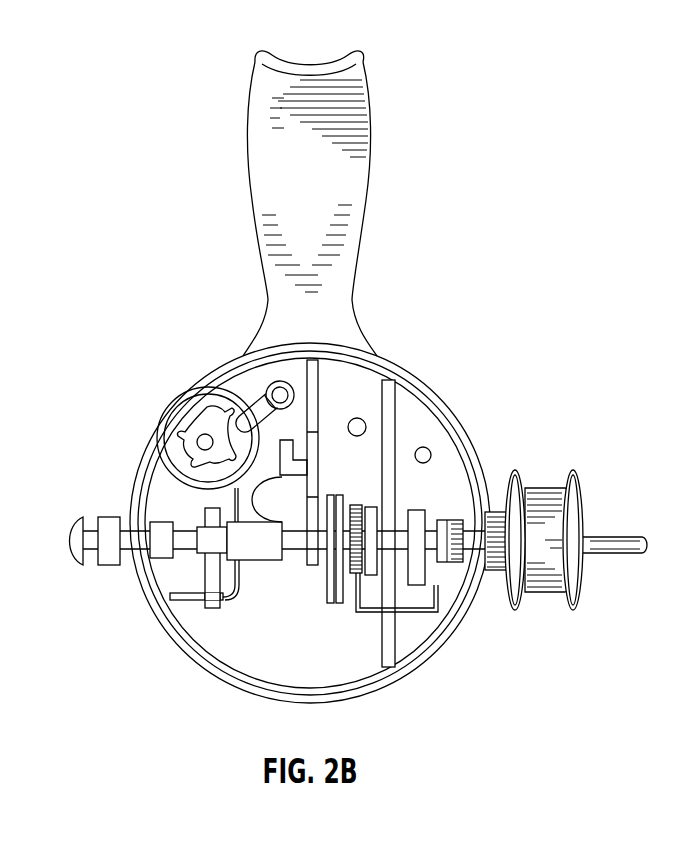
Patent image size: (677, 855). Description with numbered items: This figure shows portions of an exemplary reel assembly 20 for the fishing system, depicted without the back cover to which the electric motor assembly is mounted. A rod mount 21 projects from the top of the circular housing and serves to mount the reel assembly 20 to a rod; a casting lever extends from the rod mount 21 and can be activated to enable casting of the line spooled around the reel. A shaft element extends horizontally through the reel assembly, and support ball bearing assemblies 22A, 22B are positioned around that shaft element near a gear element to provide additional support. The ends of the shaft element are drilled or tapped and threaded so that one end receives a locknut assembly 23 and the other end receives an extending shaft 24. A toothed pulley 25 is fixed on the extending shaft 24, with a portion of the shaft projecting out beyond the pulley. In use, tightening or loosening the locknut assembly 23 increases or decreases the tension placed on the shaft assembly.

The reel assembly 20 is at (362, 378).
The rod mount 21 is at (350, 327).
The support ball bearing assembly 22A is at (300, 563).
The support ball bearing assembly 22B is at (383, 542).
The locknut assembly 23 is at (106, 530).
The extending shaft 24 is at (628, 535).
The toothed pulley 25 is at (540, 490).